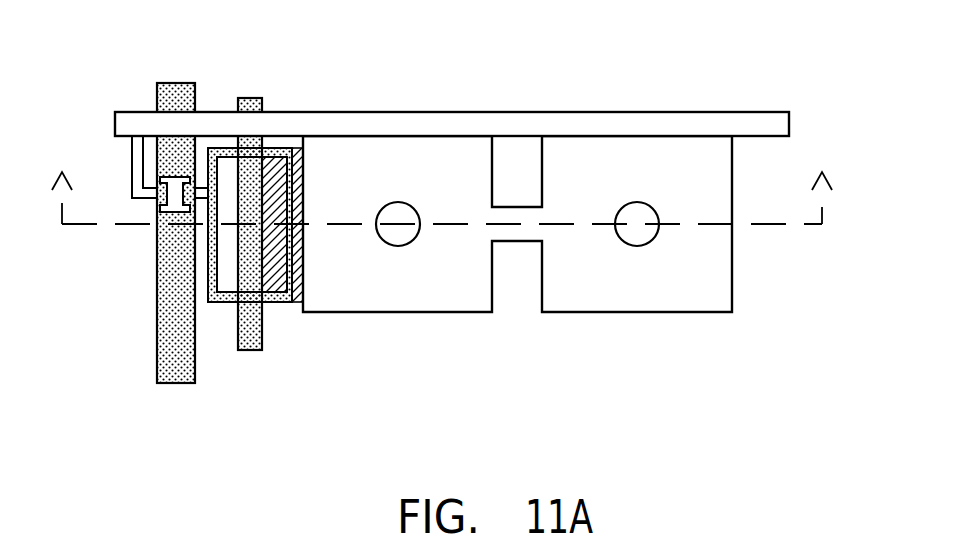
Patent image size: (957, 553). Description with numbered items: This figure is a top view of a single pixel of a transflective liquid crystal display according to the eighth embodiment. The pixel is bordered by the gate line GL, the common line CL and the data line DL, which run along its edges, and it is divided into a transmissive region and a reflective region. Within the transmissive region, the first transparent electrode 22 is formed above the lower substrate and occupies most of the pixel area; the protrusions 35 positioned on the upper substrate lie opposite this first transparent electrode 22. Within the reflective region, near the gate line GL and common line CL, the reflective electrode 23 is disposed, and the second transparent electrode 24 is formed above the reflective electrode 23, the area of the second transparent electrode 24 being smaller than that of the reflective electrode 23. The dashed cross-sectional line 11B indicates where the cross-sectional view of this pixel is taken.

The first transparent electrode 22 is at (727, 292).
The reflective electrode 23 is at (233, 276).
The second transparent electrode 24 is at (293, 302).
The protrusion 35 is at (397, 243).
The gate line GL is at (178, 82).
The common line CL is at (253, 98).
The data line DL is at (452, 111).
The cross-sectional line 11B- 11B is at (442, 180).